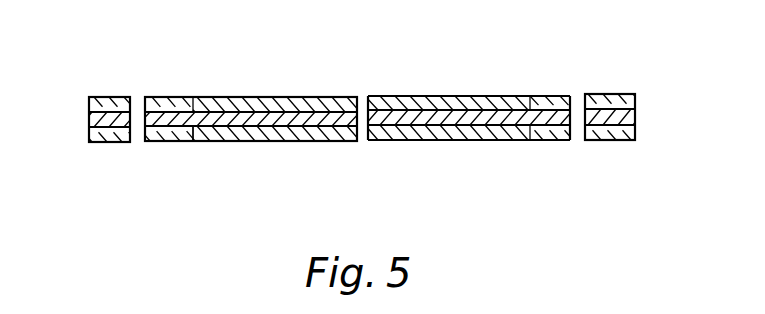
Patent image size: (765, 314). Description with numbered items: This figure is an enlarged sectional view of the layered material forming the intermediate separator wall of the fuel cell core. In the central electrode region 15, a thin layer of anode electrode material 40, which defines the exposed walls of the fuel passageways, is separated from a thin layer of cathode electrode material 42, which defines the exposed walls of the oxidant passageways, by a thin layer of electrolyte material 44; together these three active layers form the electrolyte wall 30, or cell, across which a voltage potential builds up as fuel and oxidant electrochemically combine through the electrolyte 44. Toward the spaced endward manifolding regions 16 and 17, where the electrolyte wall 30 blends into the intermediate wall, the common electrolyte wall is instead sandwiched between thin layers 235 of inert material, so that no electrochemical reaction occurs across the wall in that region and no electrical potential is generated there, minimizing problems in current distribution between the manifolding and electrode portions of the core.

The electrolyte wall 30 is at (313, 82).
The anode electrode material 40 is at (232, 97).
The cathode electrode material 42 is at (263, 143).
The manifolding region 16 is at (172, 143).
The central electrode region 15 is at (437, 96).
The manifolding region 17 is at (548, 142).
The electrolyte material 44 is at (397, 127).
The thin layers of inert material 235 is at (103, 97).